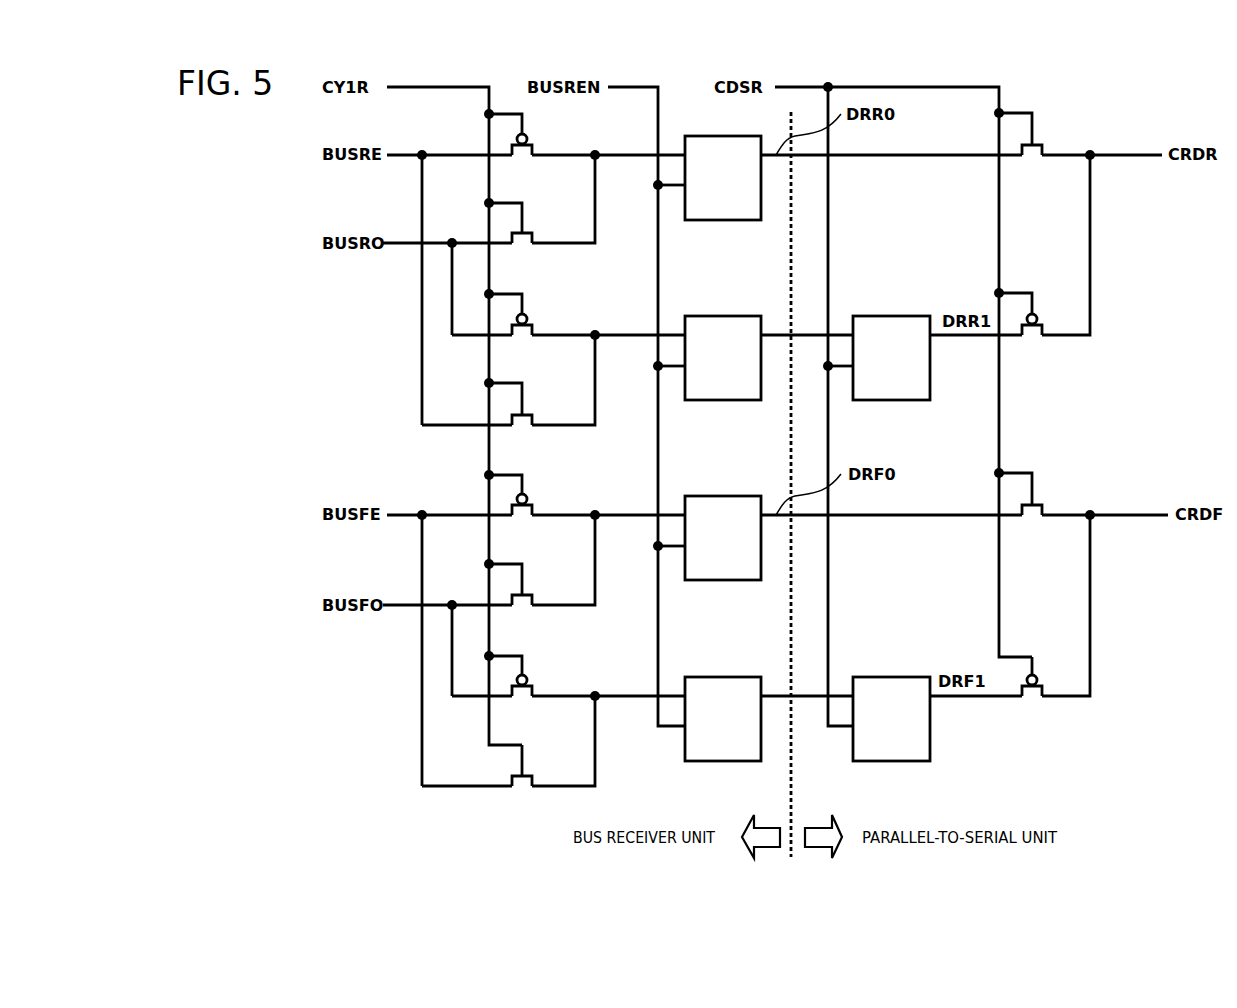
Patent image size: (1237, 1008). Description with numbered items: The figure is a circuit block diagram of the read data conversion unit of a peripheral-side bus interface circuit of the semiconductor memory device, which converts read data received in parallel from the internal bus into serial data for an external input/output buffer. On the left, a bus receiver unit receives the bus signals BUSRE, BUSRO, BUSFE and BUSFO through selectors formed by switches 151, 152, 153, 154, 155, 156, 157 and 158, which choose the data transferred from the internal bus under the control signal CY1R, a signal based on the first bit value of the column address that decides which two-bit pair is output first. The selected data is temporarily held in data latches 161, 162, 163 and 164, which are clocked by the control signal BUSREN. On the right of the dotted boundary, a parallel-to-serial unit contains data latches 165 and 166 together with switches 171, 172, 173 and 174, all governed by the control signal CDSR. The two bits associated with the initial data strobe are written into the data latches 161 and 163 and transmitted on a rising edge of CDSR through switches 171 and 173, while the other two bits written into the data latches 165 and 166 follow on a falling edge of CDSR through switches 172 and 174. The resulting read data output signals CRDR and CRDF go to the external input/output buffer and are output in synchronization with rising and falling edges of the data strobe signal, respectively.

The switch 151 is at (535, 151).
The switch 152 is at (535, 239).
The switch 153 is at (535, 331).
The switch 154 is at (535, 421).
The switch 155 is at (535, 511).
The switch 156 is at (535, 601).
The switch 157 is at (535, 692).
The switch 158 is at (535, 782).
The data latch 161 is at (730, 221).
The data latch 162 is at (730, 401).
The data latch 163 is at (730, 581).
The data latch 164 is at (740, 762).
The data latch 165 is at (872, 315).
The data latch 166 is at (906, 659).
The switch 171 is at (1043, 143).
The switch 172 is at (1043, 325).
The switch 173 is at (1043, 503).
The switch 174 is at (1043, 686).